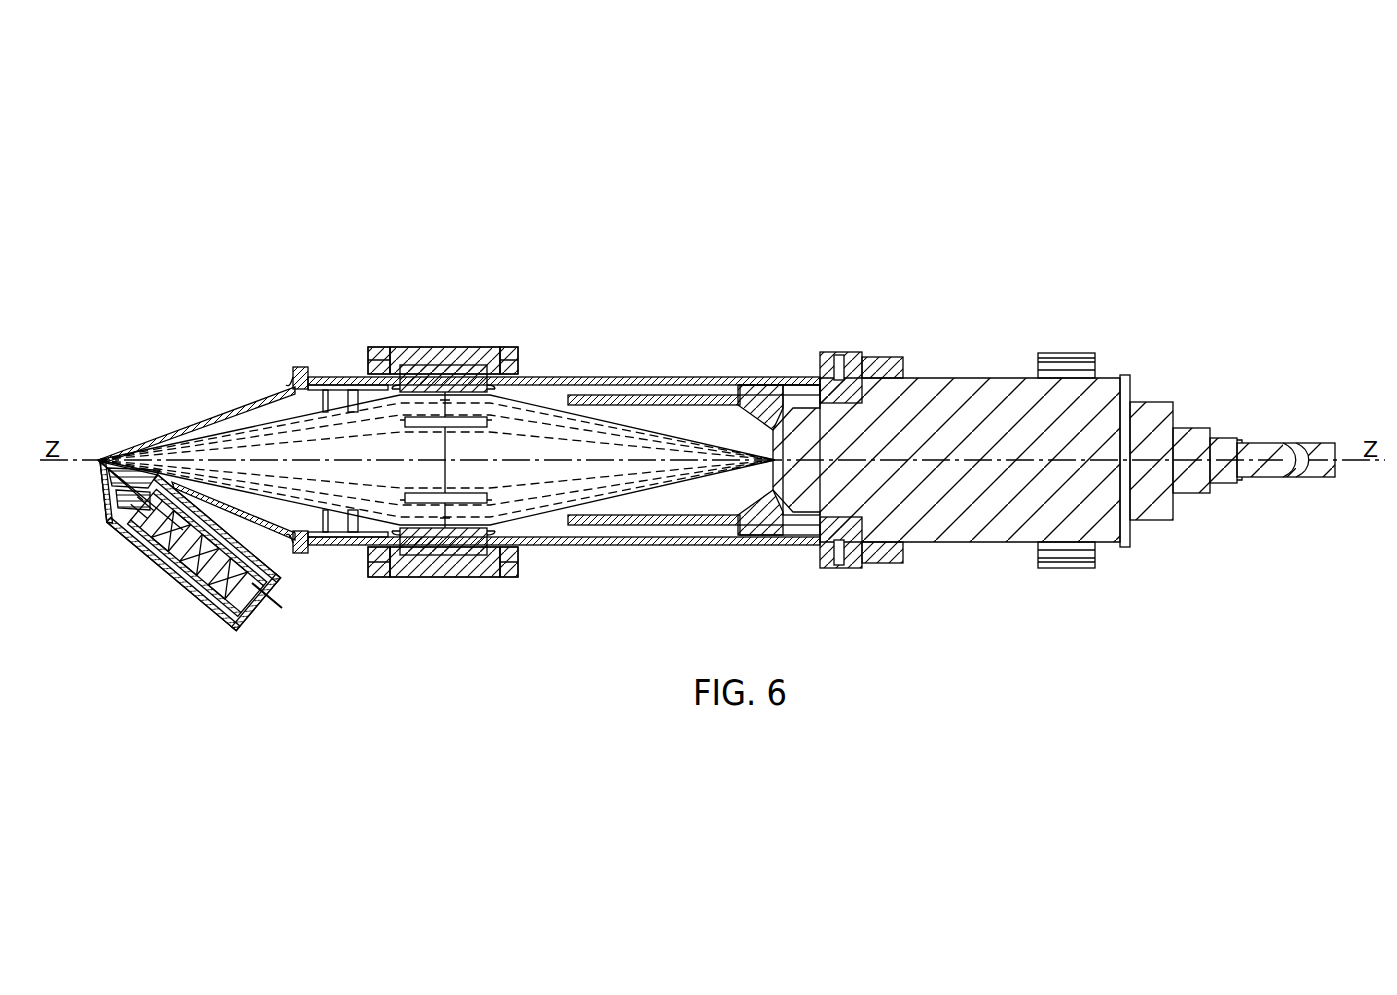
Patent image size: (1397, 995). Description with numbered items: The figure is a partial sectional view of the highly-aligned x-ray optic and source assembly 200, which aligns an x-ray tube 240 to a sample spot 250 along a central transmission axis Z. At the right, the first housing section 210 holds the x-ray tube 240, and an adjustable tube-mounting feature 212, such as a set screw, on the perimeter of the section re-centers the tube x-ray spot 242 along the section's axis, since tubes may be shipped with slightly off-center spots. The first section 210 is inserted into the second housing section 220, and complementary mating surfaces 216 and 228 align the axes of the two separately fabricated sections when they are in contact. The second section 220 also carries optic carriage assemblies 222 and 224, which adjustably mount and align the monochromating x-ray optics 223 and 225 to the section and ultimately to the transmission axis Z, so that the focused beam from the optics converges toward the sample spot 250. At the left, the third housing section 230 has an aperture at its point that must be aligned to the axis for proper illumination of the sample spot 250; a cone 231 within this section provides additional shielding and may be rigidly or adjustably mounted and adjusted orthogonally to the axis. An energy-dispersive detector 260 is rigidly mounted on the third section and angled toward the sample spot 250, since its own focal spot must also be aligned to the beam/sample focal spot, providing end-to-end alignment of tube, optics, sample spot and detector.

The x-ray optic and source assembly 200 is at (675, 216).
The first housing section 210 is at (767, 545).
The adjustable tube-mounting feature 212 is at (840, 350).
The mating surface 216 is at (800, 378).
The second housing section 220 is at (572, 377).
The optic carriage assembly 222 is at (404, 346).
The x-ray optic 223 is at (450, 370).
The optic carriage assembly 224 is at (400, 577).
The x-ray optic 225 is at (453, 555).
The mating surface 228 is at (773, 398).
The third housing section 230 is at (300, 367).
The cone 231 is at (262, 400).
The x-ray tube 240 is at (975, 395).
The tube x-ray spot 242 is at (808, 466).
The sample spot 250 is at (98, 460).
The energy-dispersive detector 260 is at (212, 594).